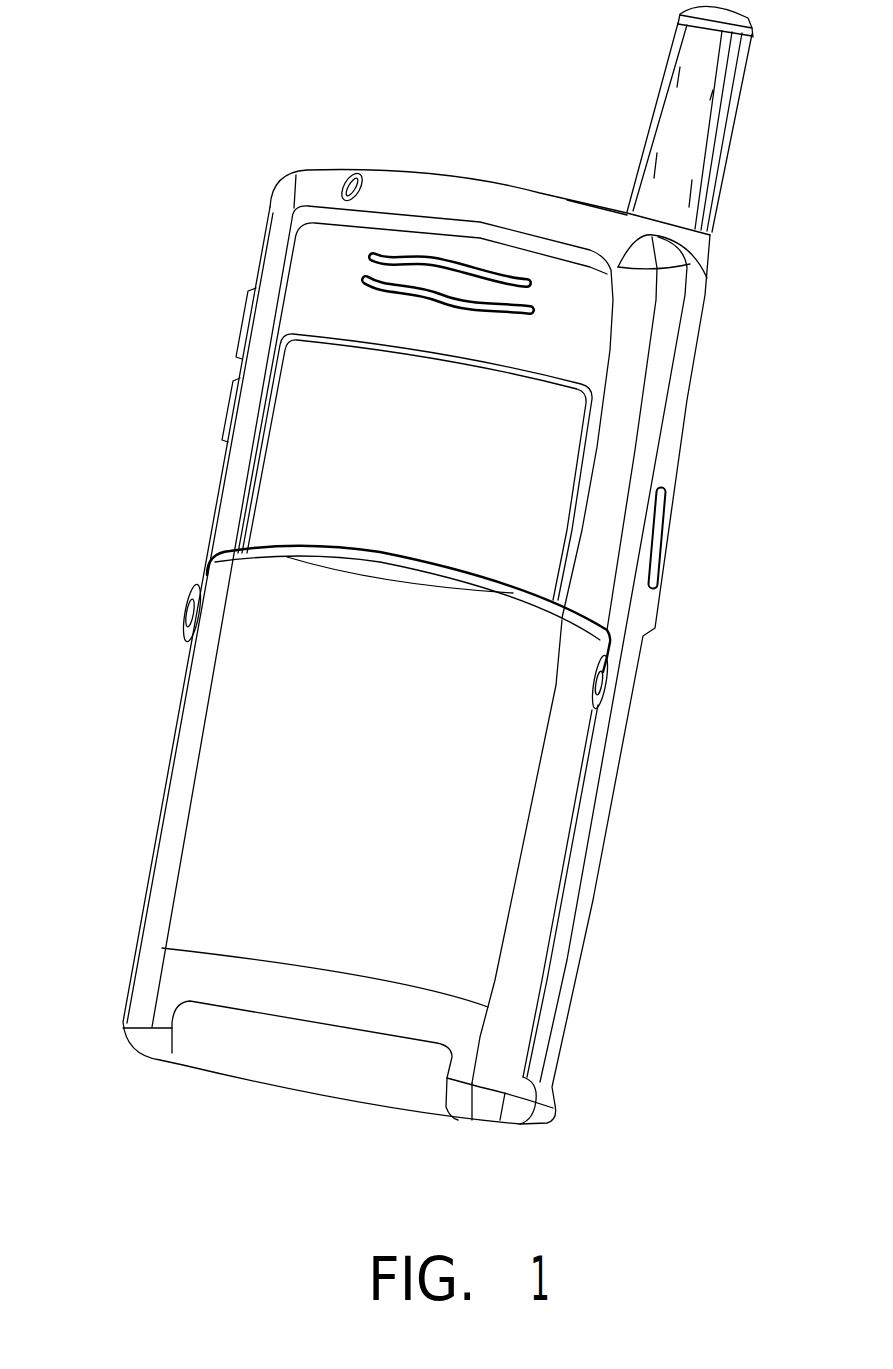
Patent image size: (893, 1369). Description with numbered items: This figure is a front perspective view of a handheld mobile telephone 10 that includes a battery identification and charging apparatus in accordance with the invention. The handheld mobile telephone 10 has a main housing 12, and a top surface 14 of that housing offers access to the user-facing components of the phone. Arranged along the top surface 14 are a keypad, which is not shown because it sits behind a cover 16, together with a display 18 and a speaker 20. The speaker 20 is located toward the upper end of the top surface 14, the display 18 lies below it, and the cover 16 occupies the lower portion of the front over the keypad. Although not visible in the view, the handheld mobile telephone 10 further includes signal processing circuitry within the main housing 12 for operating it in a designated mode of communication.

The handheld mobile telephone 10 is at (263, 148).
The main housing 12 is at (183, 685).
The top surface 14 is at (253, 372).
The cover 16 is at (232, 792).
The display 18 is at (297, 468).
The speaker 20 is at (363, 288).